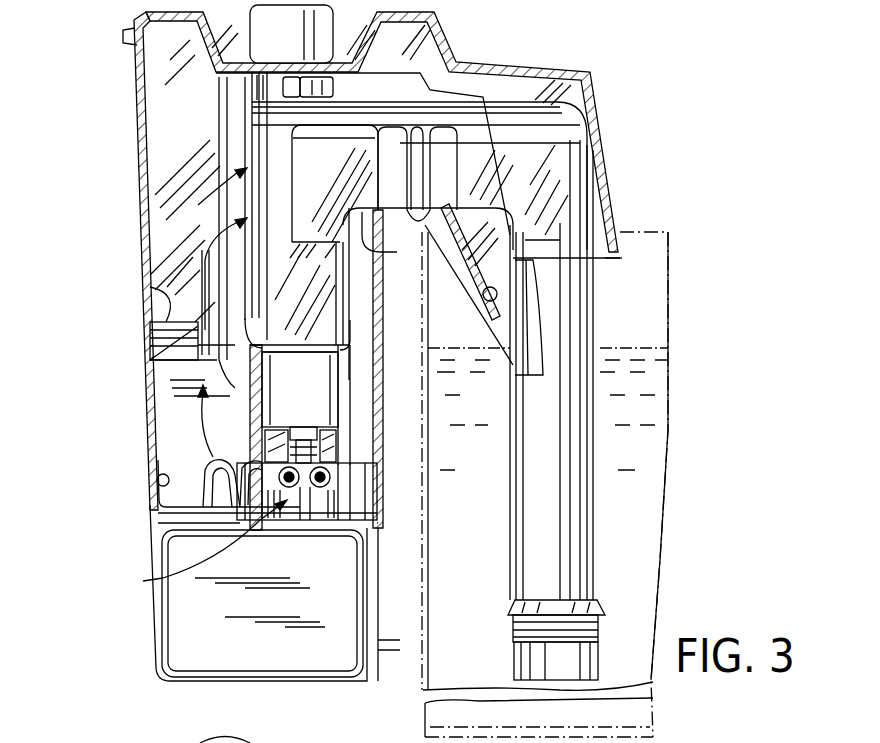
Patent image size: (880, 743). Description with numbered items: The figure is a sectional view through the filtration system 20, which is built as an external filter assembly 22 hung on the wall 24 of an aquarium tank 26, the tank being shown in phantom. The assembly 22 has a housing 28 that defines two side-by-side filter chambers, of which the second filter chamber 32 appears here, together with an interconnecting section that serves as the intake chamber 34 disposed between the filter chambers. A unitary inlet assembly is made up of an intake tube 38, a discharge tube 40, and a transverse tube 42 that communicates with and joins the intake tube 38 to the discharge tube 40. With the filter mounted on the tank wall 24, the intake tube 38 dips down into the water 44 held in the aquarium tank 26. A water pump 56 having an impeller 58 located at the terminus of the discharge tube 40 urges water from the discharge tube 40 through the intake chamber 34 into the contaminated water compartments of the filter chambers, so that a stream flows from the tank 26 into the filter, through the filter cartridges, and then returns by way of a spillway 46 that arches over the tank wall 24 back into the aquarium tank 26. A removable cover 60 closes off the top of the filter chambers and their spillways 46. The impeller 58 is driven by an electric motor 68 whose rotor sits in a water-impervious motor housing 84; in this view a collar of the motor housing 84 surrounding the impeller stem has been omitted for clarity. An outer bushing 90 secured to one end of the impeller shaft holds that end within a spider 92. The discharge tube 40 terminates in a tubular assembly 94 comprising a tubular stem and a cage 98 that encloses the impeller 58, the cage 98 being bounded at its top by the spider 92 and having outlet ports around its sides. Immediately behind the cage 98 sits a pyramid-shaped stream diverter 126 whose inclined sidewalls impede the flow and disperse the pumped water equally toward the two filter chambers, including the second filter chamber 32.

The filtration system 20 is at (634, 107).
The external filter assembly 22 is at (137, 415).
The wall 24 is at (433, 544).
The aquarium tank 26 is at (655, 232).
The housing 28 is at (127, 164).
The second filter chamber 32 is at (150, 290).
The intake chamber 34 is at (153, 480).
The intake tube 38 is at (600, 547).
The discharge tube 40 is at (372, 305).
The transverse tube 42 is at (372, 248).
The water 44 is at (628, 350).
The spillway 46 is at (458, 310).
The water pump 56 is at (195, 554).
The impeller 58 is at (330, 492).
The removable cover 60 is at (538, 62).
The electric motor 68 is at (197, 622).
The motor housing 84 is at (163, 667).
The outer bushing 90 is at (198, 734).
The spider 92 is at (273, 427).
The tubular assembly 94 is at (350, 399).
The cage 98 is at (250, 462).
The stream diverter 126 is at (175, 456).